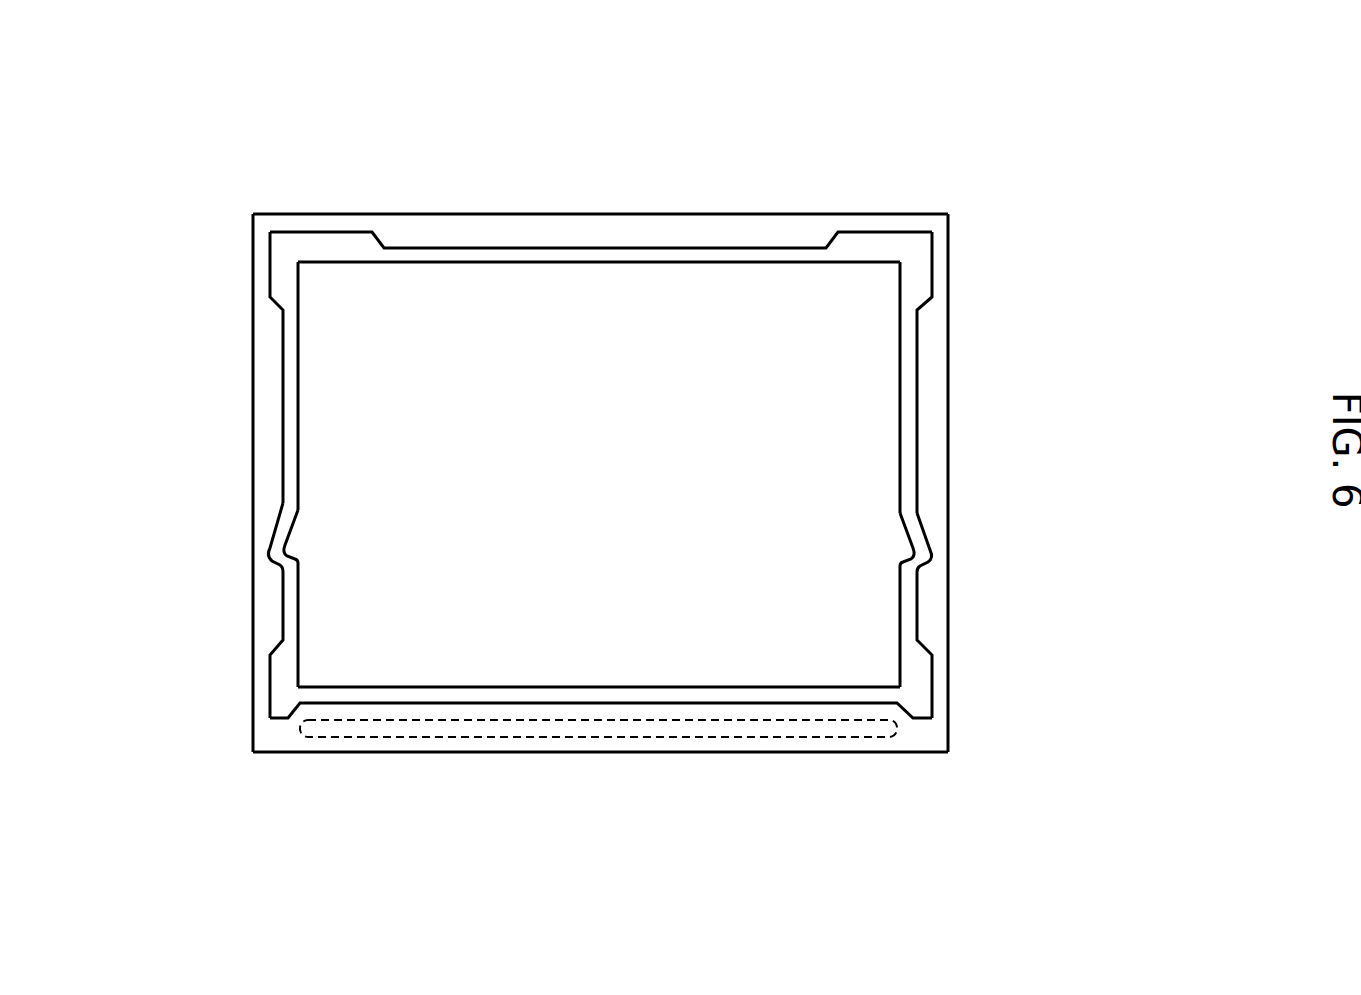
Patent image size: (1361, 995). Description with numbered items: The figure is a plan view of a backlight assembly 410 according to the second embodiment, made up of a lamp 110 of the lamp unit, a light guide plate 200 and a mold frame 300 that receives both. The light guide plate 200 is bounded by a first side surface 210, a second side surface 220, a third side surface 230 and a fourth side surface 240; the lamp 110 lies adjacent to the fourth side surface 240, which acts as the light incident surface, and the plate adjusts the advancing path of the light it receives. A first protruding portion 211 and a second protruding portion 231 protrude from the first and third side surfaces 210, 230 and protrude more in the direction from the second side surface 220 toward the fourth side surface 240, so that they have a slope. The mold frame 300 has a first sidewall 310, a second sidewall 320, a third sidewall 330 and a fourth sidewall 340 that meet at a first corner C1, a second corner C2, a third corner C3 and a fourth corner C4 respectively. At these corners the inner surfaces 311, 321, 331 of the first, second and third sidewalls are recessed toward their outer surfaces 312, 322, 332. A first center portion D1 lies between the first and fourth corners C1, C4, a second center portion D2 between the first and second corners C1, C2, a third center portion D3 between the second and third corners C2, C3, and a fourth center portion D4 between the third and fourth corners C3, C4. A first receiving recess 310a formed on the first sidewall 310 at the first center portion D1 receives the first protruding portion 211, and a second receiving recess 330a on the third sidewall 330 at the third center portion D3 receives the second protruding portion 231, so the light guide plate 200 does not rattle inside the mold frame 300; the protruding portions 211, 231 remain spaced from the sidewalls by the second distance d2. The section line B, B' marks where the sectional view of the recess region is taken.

The lamp 110 is at (751, 743).
The light guide plate 200 is at (651, 501).
The first side surface 210 is at (298, 378).
The first protruding portion 211 is at (312, 522).
The second side surface 220 is at (738, 265).
The third side surface 230 is at (897, 320).
The second protruding portion 231 is at (888, 522).
The fourth side surface 240 is at (603, 688).
The mold frame 300 is at (599, 481).
The first sidewall 310 is at (201, 483).
The inner surface of first sidewall 311 is at (288, 420).
The outer surface of first sidewall 312 is at (253, 345).
The first receiving recess 310a is at (273, 517).
The second sidewall 320 is at (600, 183).
The inner surface of second sidewall 321 is at (576, 158).
The outer surface of second sidewall 322 is at (560, 214).
The third sidewall 330 is at (998, 483).
The inner surface of third sidewall 331 is at (912, 436).
The outer surface of third sidewall 332 is at (948, 360).
The second receiving recess 330a is at (987, 514).
The fourth sidewall 340 is at (394, 756).
The backlight assembly 410 is at (590, 46).
The first corner C1 is at (320, 270).
The second corner C2 is at (886, 280).
The third corner C3 is at (891, 681).
The fourth corner C4 is at (320, 670).
The first center portion D1 is at (270, 310).
The second center portion D2 is at (826, 248).
The third center portion D3 is at (920, 312).
The fourth center portion D4 is at (897, 740).
The second distance d2 is at (230, 545).
The section line B is at (948, 605).
The section line B' is at (1036, 605).